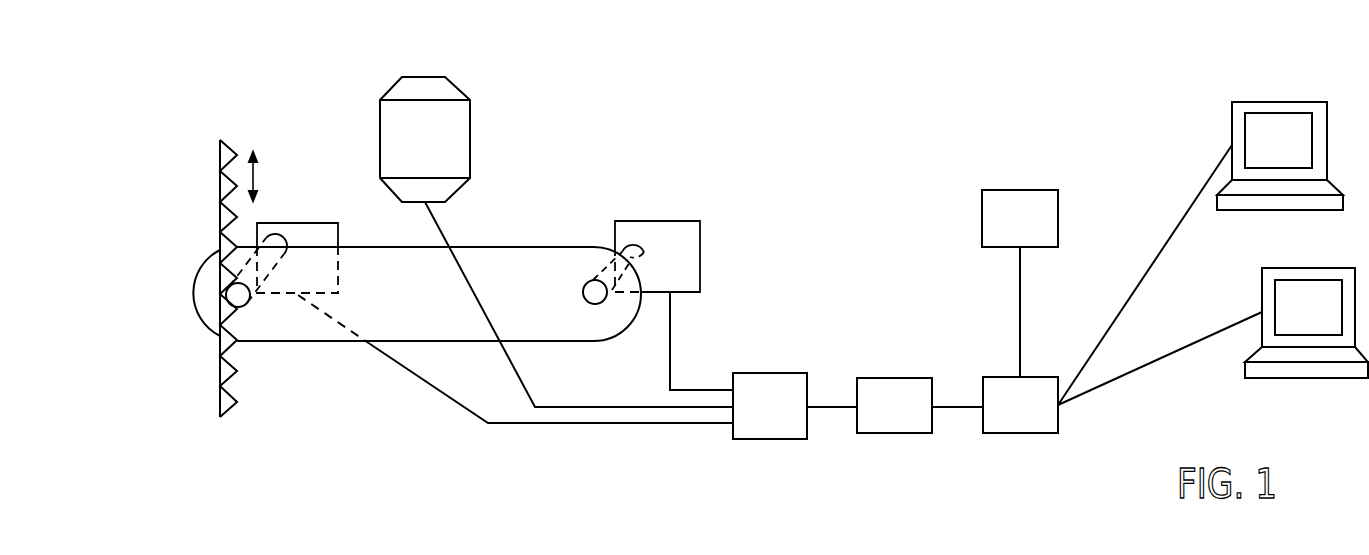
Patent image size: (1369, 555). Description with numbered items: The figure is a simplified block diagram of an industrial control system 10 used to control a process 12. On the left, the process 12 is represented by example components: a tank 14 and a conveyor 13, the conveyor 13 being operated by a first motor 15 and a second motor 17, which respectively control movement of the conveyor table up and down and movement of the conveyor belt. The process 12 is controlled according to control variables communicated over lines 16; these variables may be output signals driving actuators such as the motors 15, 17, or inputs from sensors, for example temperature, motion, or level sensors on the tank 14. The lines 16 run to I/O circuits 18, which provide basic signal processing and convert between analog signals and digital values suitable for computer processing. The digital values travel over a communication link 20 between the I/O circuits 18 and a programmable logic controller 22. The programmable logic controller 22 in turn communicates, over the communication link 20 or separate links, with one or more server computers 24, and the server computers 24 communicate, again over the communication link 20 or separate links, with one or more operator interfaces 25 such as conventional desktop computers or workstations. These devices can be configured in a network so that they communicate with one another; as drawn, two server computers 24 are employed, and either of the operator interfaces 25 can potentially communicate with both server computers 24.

The industrial control system 10 is at (873, 124).
The process 12 is at (158, 122).
The conveyor 13 is at (528, 246).
The tank 14 is at (425, 77).
The first motor 15 is at (297, 223).
The lines 16 is at (678, 423).
The second motor 17 is at (658, 221).
The I/O circuits 18 is at (770, 439).
The communication link 20 is at (827, 406).
The programmable logic controller 22 is at (893, 433).
The server computers 24 is at (1020, 433).
The operator interfaces 25 is at (1280, 102).